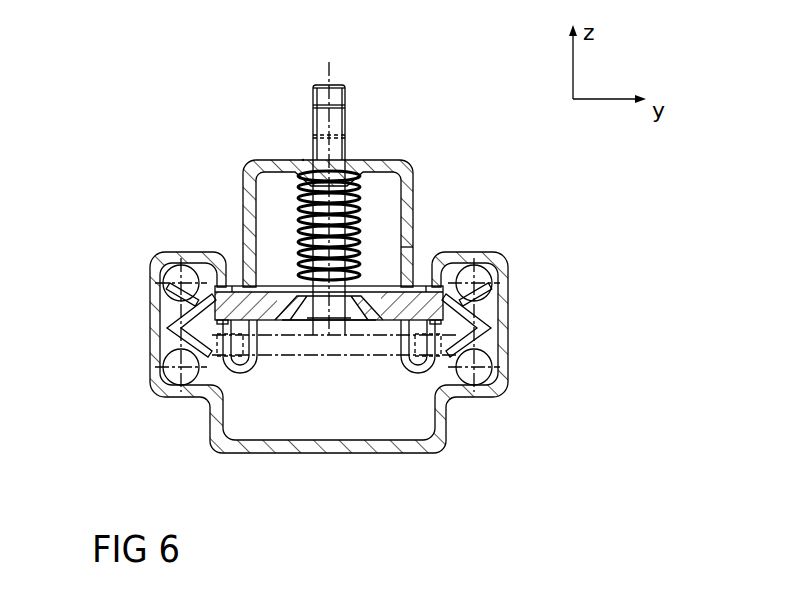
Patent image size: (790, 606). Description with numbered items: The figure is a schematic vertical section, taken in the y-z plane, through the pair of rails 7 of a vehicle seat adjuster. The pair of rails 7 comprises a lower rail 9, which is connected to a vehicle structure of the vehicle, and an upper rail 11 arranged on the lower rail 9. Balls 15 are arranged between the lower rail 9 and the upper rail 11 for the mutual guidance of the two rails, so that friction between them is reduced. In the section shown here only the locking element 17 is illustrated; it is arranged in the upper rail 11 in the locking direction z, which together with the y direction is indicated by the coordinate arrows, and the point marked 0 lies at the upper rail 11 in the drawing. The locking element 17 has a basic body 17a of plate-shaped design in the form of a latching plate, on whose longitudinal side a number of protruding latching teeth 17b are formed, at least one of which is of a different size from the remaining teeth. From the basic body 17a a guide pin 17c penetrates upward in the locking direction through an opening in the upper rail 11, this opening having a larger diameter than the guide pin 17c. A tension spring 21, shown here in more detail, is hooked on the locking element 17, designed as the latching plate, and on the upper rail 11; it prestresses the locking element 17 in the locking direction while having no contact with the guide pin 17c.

The reference point 0 is at (300, 159).
The pair of rails 7 is at (128, 192).
The lower rail 9 is at (150, 312).
The upper rail 11 is at (398, 167).
The balls 15 is at (495, 274).
The locking element 17 is at (281, 71).
The basic body 17a is at (383, 313).
The latching teeth 17b is at (444, 293).
The guide pin 17c is at (345, 88).
The tension spring 21 is at (362, 222).